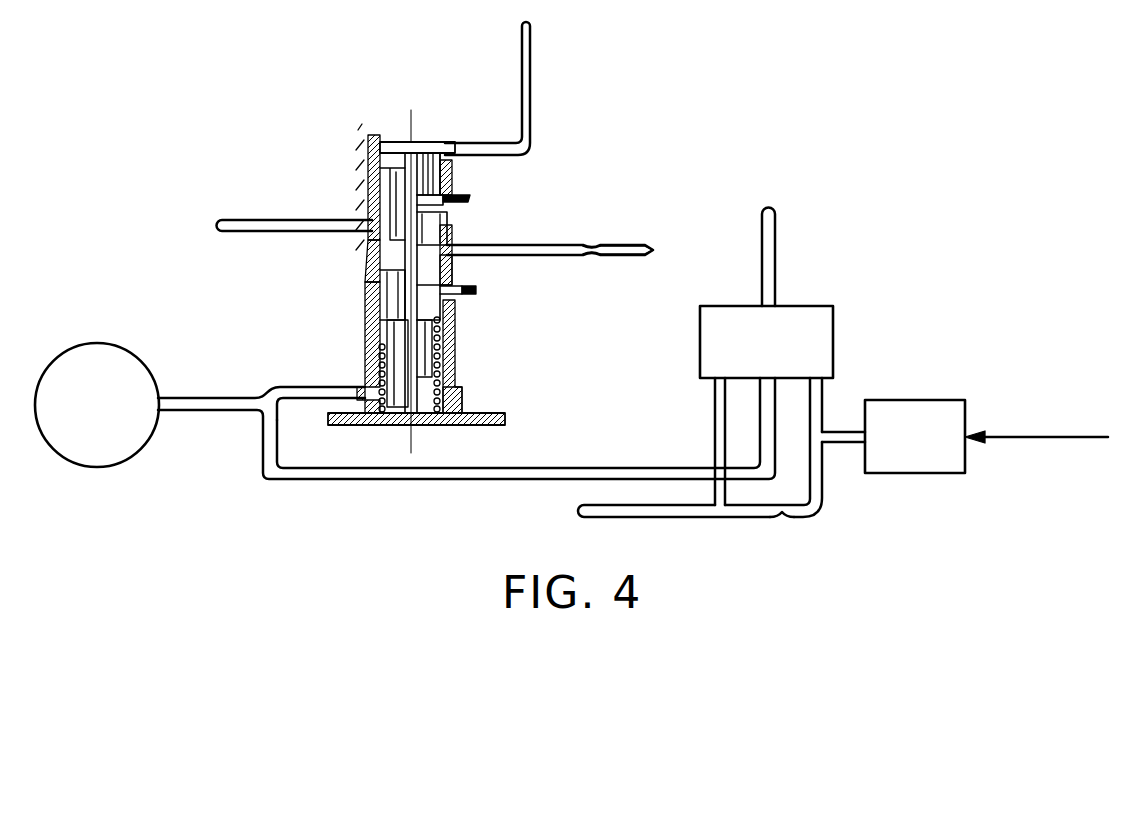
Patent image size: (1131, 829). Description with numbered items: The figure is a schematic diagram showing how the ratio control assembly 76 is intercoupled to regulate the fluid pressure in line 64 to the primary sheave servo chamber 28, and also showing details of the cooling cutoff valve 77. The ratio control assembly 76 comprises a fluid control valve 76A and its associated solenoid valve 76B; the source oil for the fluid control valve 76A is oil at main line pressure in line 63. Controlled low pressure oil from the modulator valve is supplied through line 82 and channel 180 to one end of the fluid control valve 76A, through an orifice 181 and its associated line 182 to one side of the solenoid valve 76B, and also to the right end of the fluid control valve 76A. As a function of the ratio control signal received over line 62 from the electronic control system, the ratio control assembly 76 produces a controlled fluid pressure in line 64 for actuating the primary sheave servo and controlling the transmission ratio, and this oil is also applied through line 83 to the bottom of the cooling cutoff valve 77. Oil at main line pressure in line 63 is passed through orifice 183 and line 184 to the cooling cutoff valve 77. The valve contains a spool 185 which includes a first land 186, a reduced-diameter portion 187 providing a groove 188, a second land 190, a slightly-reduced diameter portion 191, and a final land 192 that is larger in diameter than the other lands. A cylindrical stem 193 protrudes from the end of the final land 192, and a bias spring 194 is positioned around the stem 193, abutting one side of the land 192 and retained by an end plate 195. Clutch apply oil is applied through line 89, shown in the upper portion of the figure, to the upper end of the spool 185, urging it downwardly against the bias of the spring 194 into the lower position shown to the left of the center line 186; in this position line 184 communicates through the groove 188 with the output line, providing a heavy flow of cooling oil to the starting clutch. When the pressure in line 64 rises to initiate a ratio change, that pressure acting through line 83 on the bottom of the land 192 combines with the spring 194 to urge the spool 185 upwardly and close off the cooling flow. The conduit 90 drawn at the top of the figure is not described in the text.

The primary sheave servo chamber 28 is at (97, 405).
The line 62 is at (1010, 435).
The line 63 is at (633, 247).
The line 64 is at (263, 457).
The ratio control assembly 76 is at (1040, 346).
The fluid control valve 76A is at (766, 342).
The solenoid valve 76B is at (915, 436).
The cooling cutoff valve 77 is at (451, 281).
The line 82 is at (690, 518).
The line 83 is at (299, 389).
The line 89 is at (314, 222).
The conduit 90 is at (532, 93).
The channel 180 is at (715, 414).
The orifice 181 is at (782, 518).
The line 182 is at (822, 489).
The orifice 183 is at (595, 251).
The line 184 is at (519, 256).
The spool 185 is at (365, 275).
The first land 186 is at (433, 176).
The reduced-diameter portion 187 is at (455, 205).
The groove 188 is at (435, 228).
The second land 190 is at (446, 276).
The slightly-reduced diameter portion 191 is at (378, 315).
The final land 192 is at (450, 305).
The cylindrical stem 193 is at (450, 342).
The bias spring 194 is at (458, 401).
The end plate 195 is at (487, 426).